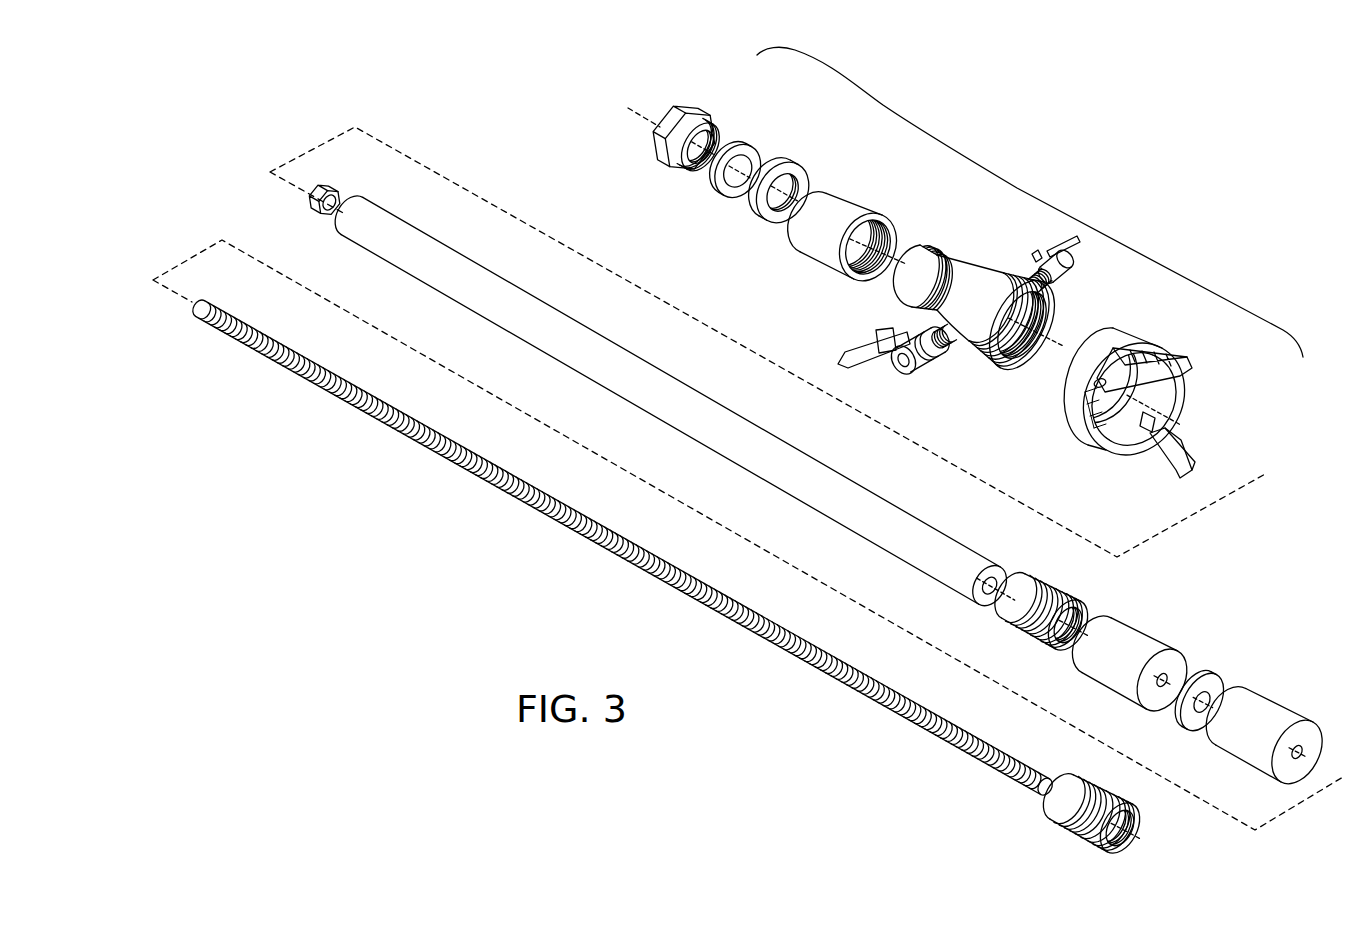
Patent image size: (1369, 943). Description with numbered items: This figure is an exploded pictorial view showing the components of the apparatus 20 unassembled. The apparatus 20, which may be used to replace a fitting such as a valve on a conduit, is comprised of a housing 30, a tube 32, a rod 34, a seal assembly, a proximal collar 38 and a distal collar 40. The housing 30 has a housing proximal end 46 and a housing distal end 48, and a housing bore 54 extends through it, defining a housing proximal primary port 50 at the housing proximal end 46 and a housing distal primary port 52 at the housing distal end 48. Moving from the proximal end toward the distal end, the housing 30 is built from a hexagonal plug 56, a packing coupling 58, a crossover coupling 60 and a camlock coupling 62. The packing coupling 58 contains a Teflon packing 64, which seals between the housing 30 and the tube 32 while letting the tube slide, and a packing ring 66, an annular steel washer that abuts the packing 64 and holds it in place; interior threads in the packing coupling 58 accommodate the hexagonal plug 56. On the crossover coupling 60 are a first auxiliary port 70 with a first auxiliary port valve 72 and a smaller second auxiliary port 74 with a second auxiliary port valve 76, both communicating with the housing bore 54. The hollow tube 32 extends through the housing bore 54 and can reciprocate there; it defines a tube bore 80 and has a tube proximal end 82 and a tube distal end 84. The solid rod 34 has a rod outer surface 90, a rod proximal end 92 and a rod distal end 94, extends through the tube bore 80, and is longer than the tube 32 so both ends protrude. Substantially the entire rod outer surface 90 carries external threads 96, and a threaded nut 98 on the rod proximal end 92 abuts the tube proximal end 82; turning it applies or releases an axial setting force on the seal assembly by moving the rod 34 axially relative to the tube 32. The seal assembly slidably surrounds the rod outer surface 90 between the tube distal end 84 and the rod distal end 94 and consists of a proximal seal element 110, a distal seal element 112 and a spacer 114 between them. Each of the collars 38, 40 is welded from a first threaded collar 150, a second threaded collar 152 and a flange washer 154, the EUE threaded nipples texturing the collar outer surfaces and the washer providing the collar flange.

The apparatus 20 is at (484, 572).
The housing 30 is at (1046, 200).
The tube 32 is at (758, 428).
The rod 34 is at (438, 470).
The proximal collar 38 is at (1050, 591).
The distal collar 40 is at (1072, 842).
The housing proximal end 46 is at (684, 102).
The housing distal end 48 is at (1205, 372).
The housing proximal primary port 50 is at (648, 136).
The housing distal primary port 52 is at (1168, 400).
The housing bore 54 is at (1016, 368).
The hexagonal plug 56 is at (716, 118).
The packing coupling 58 is at (856, 200).
The crossover coupling 60 is at (975, 258).
The camlock coupling 62 is at (1142, 348).
The packing 64 is at (793, 172).
The packing ring 66 is at (757, 158).
The first auxiliary port 70 is at (912, 328).
The first auxiliary port valve 72 is at (918, 372).
The second auxiliary port 74 is at (1047, 290).
The second auxiliary port valve 76 is at (1068, 268).
The tube bore 80 is at (990, 603).
The tube proximal end 82 is at (366, 206).
The tube distal end 84 is at (1004, 563).
The rod outer surface 90 is at (655, 574).
The rod proximal end 92 is at (196, 313).
The rod distal end 94 is at (1040, 808).
The external threads 96 is at (695, 600).
The threaded nut 98 is at (338, 183).
The proximal seal element 110 is at (1148, 632).
The distal seal element 112 is at (1282, 700).
The spacer 114 is at (1212, 682).
The first threaded collar 150 is at (1012, 628).
The second threaded collar 152 is at (1046, 655).
The flange washer 154 is at (1030, 645).